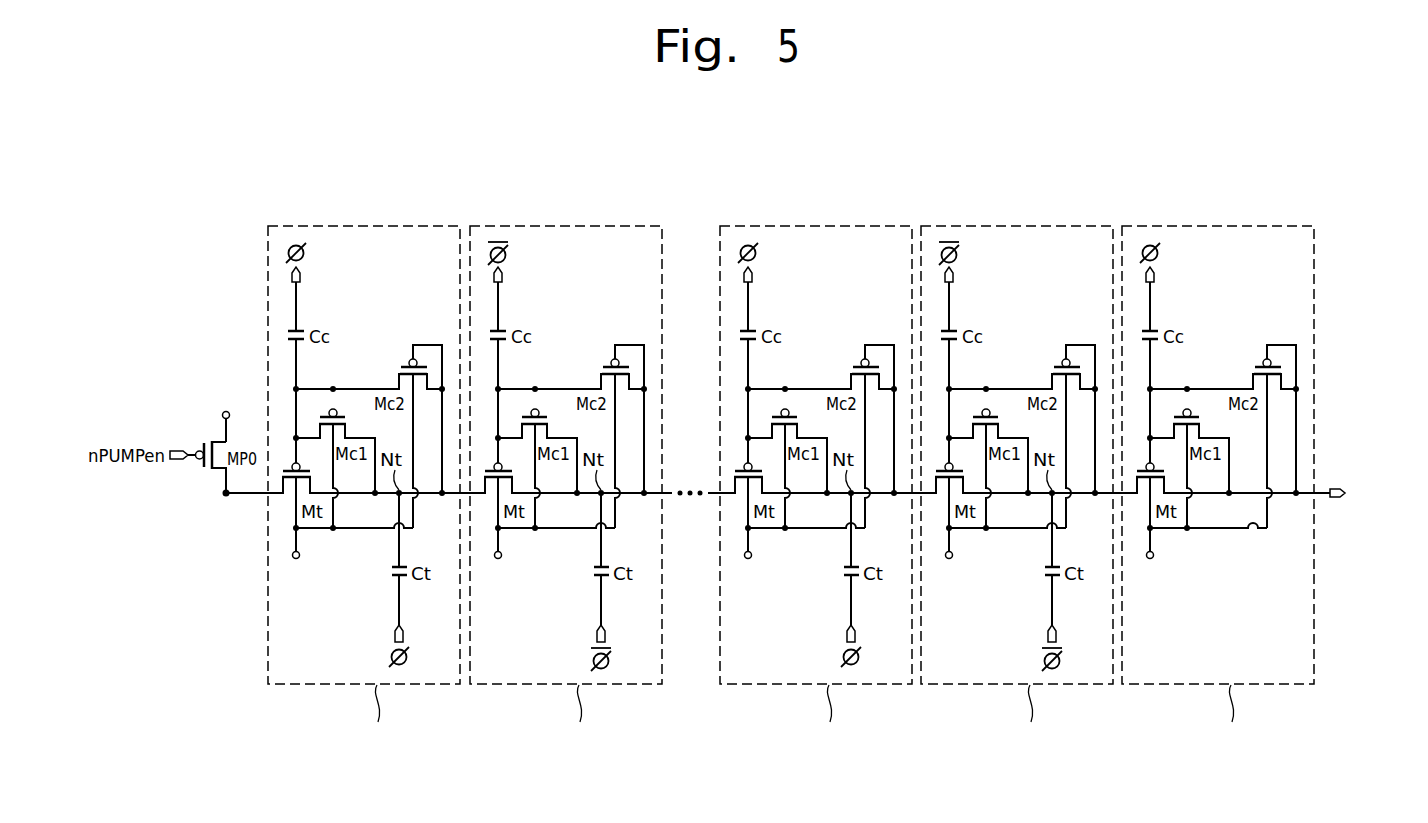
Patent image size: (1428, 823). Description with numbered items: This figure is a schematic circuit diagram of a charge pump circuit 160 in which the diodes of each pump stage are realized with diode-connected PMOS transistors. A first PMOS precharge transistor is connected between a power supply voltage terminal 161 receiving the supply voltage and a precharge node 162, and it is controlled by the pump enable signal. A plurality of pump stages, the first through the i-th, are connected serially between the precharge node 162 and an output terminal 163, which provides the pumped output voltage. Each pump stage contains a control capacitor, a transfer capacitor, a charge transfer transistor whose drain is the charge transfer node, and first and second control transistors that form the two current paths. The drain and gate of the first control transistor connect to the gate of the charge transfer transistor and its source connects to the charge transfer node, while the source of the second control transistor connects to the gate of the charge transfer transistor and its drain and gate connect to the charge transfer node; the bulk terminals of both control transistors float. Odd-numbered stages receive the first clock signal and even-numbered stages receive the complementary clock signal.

The charge pump circuit 160 is at (1285, 176).
The power supply voltage terminal 161 is at (221, 413).
The precharge node 162 is at (221, 494).
The output terminal 163 is at (1334, 501).